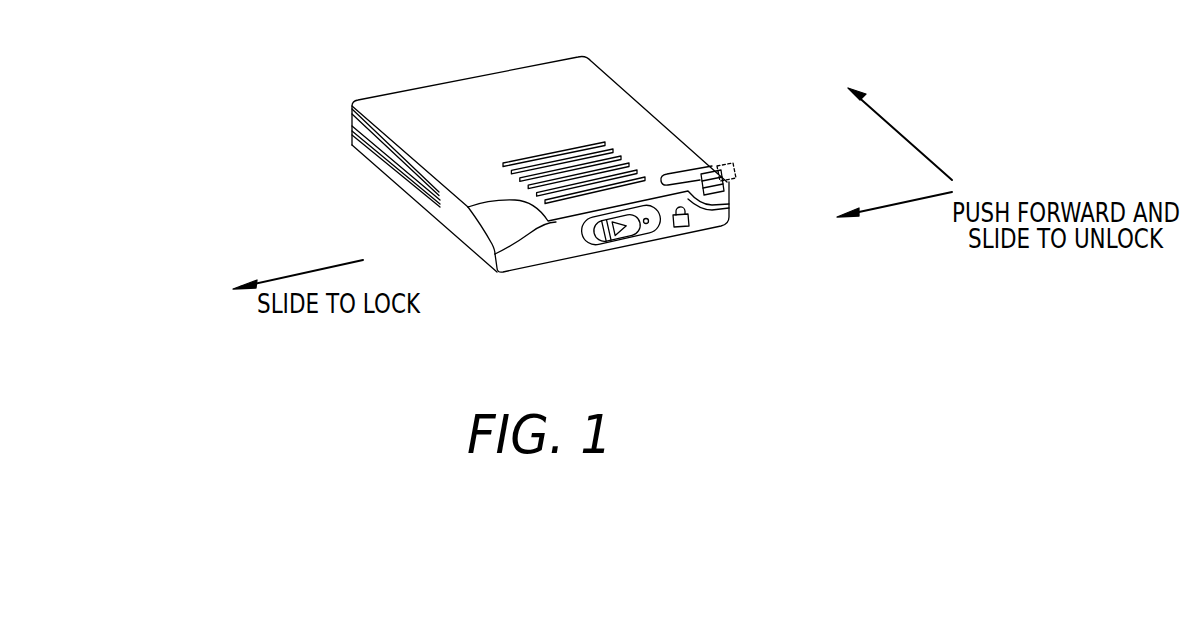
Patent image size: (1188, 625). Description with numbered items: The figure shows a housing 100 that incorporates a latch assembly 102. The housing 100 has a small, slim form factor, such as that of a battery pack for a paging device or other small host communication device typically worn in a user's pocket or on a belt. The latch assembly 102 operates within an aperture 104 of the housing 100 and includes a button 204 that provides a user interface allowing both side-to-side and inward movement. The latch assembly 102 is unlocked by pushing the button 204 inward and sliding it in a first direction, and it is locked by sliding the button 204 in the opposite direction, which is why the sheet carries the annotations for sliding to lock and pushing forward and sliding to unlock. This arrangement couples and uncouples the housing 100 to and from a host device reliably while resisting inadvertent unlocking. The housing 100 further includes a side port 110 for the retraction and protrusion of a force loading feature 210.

The housing 100 is at (930, 309).
The latch assembly 102 is at (632, 287).
The aperture 104 is at (603, 244).
The button 204 is at (647, 226).
The side port 110 is at (733, 184).
The force loading feature 210 is at (722, 165).